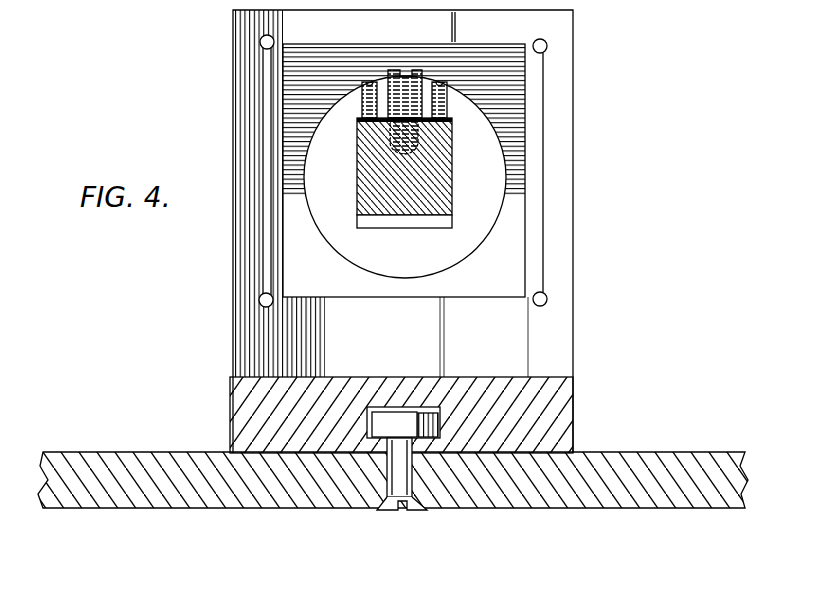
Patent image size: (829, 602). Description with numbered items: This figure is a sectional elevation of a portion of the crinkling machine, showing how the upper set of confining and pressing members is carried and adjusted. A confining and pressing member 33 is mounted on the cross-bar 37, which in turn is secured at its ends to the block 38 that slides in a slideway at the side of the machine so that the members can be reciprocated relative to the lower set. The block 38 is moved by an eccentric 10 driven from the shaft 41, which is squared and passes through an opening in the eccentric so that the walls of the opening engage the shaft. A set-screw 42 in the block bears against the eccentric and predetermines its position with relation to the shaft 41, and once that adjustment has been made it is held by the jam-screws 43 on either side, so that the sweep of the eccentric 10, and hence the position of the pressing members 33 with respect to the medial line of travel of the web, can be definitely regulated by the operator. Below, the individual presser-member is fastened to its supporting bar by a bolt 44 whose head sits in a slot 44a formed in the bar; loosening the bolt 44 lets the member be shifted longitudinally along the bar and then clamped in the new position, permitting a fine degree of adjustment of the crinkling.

The disc 10 is at (498, 168).
The confining and pressing member 33 is at (661, 460).
The cross-bar 37 is at (553, 400).
The block 38 is at (232, 265).
The shaft 41 is at (403, 218).
The set-screw 42 is at (410, 70).
The jam-screw 43 is at (370, 83).
The bolt 44 is at (398, 483).
The slot 44a is at (367, 425).